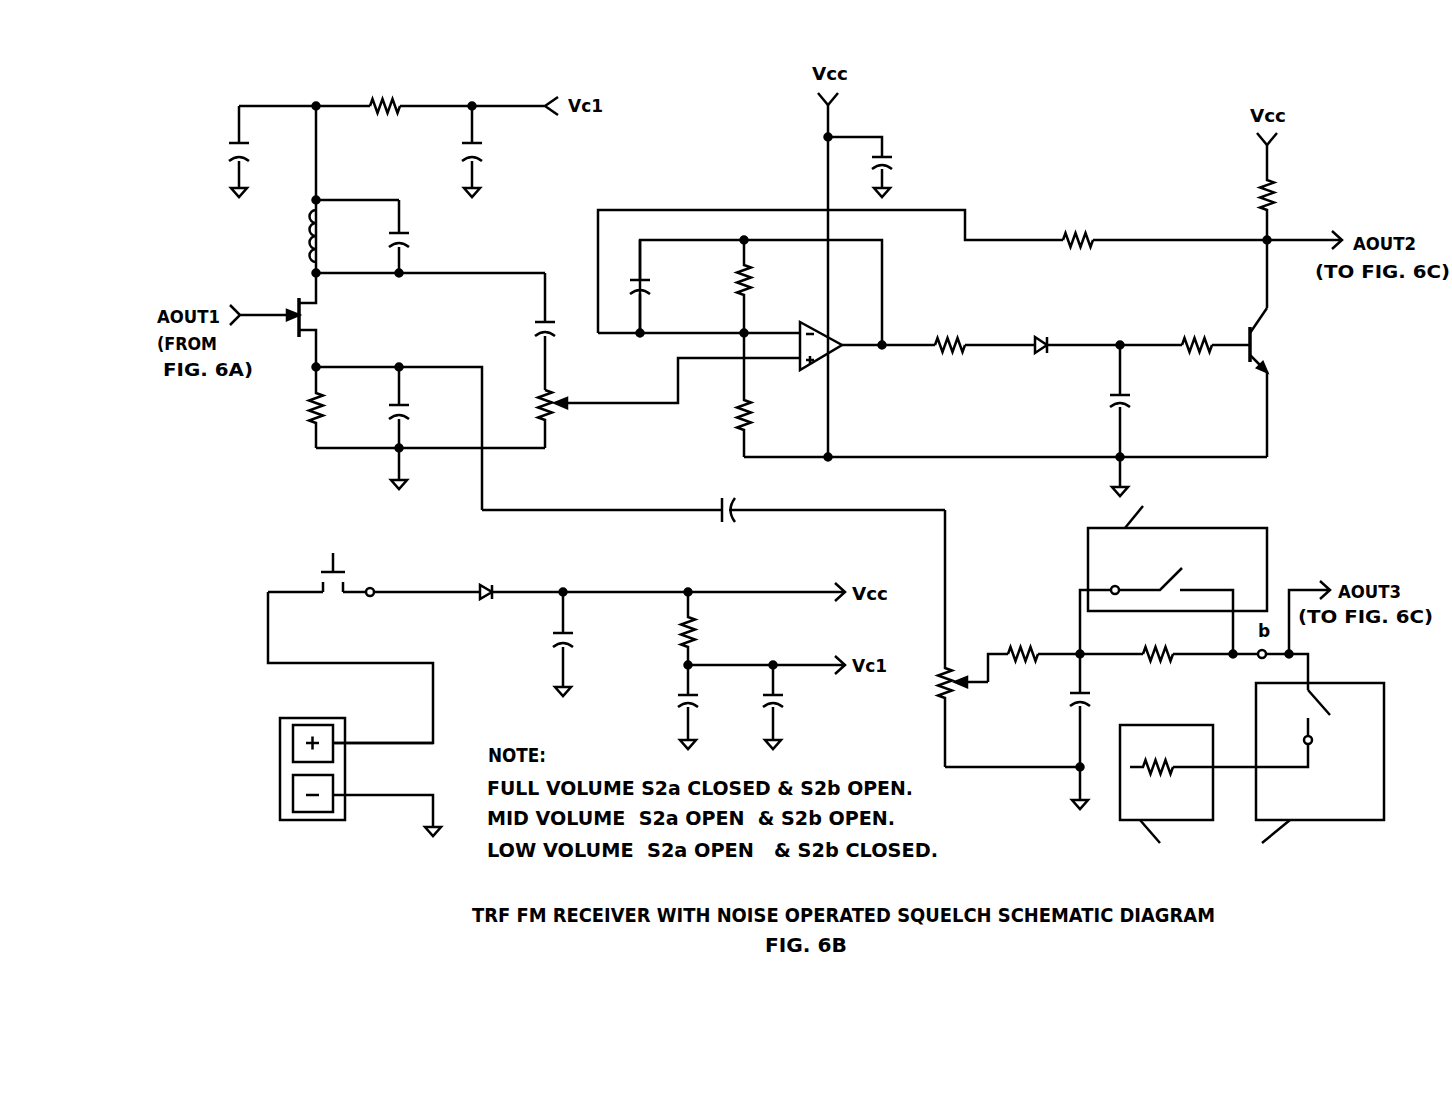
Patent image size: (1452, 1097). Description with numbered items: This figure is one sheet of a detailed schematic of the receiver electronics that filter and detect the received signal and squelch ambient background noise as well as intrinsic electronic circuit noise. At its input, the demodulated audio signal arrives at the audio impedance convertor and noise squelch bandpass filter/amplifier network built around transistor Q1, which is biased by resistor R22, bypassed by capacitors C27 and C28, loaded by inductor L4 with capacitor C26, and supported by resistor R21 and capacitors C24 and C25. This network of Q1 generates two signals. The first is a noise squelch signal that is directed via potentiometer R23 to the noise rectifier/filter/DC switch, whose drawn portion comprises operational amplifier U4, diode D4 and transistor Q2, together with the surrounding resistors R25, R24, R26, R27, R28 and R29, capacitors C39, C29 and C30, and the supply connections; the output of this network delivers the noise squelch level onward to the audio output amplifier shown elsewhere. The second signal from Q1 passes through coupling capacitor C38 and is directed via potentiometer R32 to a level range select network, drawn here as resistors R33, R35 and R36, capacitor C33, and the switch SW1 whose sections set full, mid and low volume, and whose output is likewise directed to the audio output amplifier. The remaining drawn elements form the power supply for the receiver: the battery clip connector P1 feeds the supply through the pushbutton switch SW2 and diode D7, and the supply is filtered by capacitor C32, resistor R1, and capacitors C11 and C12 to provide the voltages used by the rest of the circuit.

The resistor 2.2K R22 is at (394, 106).
The capacitor 1uF C27 is at (253, 151).
The capacitor 0.01 C28 is at (500, 151).
The inductor 22mH L4 is at (339, 236).
The capacitor 0.015 C26 is at (433, 236).
The audio impedance convertor and noise squelch bandpass filter/amplifier network Q1 is at (336, 320).
The resistor 3.9K R21 is at (344, 407).
The capacitor 0.027 C24 is at (432, 428).
The capacitor 680pF C25 is at (510, 331).
The potentiometer R23 is at (533, 415).
The noise rectifier/filter/DC switch U4 is at (856, 280).
The capacitor 1uF C39 is at (882, 166).
The capacitor 470pF C29 is at (680, 286).
The resistor 470K R25 is at (773, 286).
The resistor 1K R24 is at (767, 395).
The capacitor 0.33 C38 is at (713, 511).
The resistor 270K R28 is at (1087, 242).
The resistor 10K R29 is at (1290, 192).
The resistor 120 R26 is at (954, 346).
The noise rectifier/filter/DC switch D4 is at (1053, 345).
The capacitor 1uF C30 is at (1139, 420).
The resistor 3.9K R27 is at (1206, 346).
The noise rectifier/filter/DC switch Q2 is at (1305, 382).
The pushbutton switch SW2 is at (321, 558).
The diode 1N5818 D7 is at (484, 591).
The capacitor 220uF 10V C32 is at (595, 644).
The resistor 22 R1 is at (705, 628).
The capacitor 22uF 16V C11 is at (712, 707).
The capacitor 1uF C12 is at (792, 707).
The battery clip connector P1 is at (309, 795).
The potentiometer R32 is at (951, 638).
The resistor 10K R33 is at (1028, 655).
The resistor 12K R35 is at (1162, 653).
The capacitor 3300pF C33 is at (1119, 731).
The volume switch S1a/S1b SW1 is at (1236, 680).
The resistor 39K R36 is at (1166, 772).